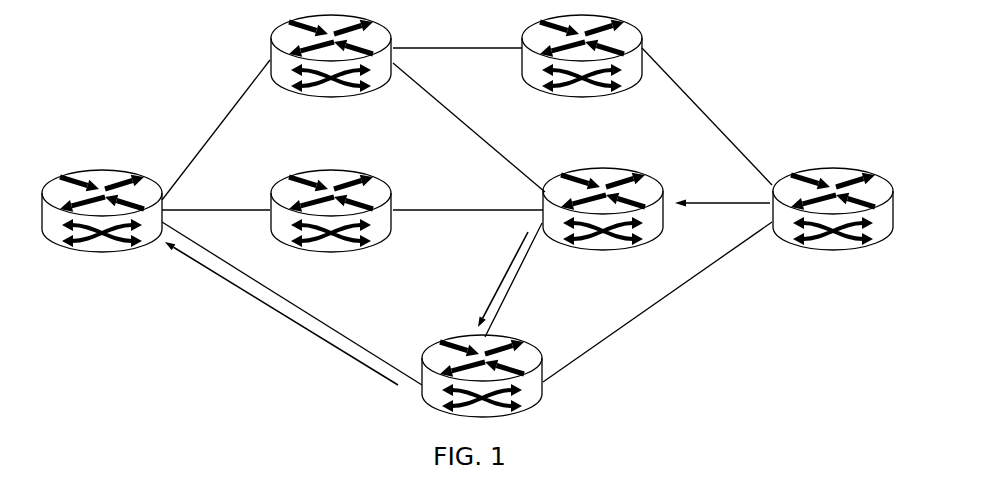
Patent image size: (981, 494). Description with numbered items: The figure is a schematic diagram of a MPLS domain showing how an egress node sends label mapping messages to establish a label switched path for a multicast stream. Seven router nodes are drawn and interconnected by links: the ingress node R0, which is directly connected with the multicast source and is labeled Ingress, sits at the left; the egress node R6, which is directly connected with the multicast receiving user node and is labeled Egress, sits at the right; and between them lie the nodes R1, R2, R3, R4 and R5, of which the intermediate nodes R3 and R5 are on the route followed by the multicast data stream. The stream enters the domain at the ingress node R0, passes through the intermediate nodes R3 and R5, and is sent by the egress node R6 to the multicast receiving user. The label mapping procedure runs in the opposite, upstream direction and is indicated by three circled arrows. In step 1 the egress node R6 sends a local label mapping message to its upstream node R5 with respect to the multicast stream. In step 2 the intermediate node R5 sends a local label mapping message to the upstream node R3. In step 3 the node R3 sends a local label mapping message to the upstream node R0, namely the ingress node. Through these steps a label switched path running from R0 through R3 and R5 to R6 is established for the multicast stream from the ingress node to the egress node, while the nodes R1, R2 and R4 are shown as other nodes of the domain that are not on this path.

The ingress node R0 is at (102, 213).
The router R1 is at (317, 56).
The router R2 is at (328, 203).
The intermediate node R3 is at (468, 376).
The router R4 is at (596, 56).
The intermediate node R5 is at (613, 205).
The egress node R6 is at (833, 212).
The step 1 is at (722, 193).
The step 2 is at (503, 279).
The step 3 is at (281, 313).